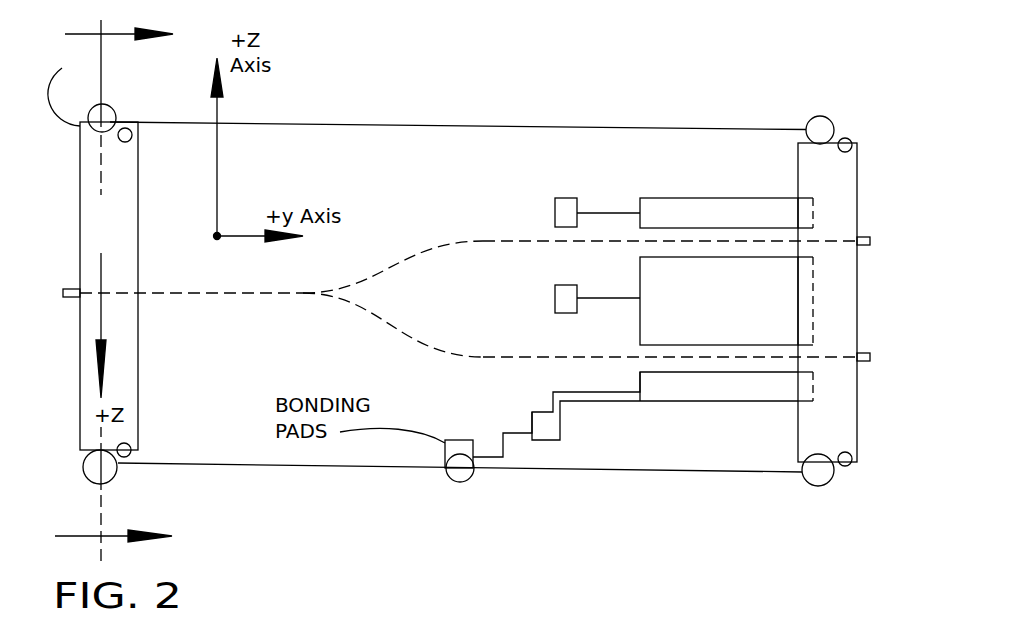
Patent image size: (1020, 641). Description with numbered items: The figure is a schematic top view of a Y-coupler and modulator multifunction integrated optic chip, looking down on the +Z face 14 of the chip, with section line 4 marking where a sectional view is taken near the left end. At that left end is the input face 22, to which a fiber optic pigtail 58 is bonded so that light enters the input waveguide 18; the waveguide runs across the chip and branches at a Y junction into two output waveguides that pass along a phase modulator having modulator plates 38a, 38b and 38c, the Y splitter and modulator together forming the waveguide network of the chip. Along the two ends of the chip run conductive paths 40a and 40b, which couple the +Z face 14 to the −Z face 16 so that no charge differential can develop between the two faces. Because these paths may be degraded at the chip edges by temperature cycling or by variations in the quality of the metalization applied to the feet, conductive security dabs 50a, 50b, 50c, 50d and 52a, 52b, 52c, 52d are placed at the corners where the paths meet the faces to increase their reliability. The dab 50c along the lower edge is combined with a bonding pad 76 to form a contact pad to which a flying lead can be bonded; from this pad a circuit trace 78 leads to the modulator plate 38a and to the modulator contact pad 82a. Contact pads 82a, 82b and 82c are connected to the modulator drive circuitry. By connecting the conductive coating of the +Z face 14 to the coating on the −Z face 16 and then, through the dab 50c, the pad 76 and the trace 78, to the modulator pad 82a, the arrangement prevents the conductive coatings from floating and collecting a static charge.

The section line 4 is at (114, 287).
The +Z face 14 is at (353, 122).
The −Z face 16 is at (345, 469).
The input waveguide 18 is at (182, 293).
The input face 22 is at (69, 92).
The conductive path 40a is at (109, 286).
The conductive path 40b is at (846, 187).
The conductive security dab 50a is at (100, 118).
The conductive security dab 50b is at (110, 475).
The conductive security dab 50c is at (818, 122).
The conductive security dab 50d is at (813, 483).
The conductive security dab 52a is at (128, 128).
The conductive security dab 52b is at (128, 457).
The conductive security dab 52c is at (848, 138).
The conductive security dab 52d is at (848, 470).
The fiber optic pigtail 58 is at (73, 289).
The modulator plate 38a is at (726, 387).
The modulator plate 38b is at (726, 301).
The modulator plate 38c is at (726, 213).
The contact pad 82a is at (555, 432).
The contact pad 82b is at (555, 295).
The contact pad 82c is at (555, 204).
The bonding pad 76 is at (468, 443).
The circuit trace 78 is at (518, 433).